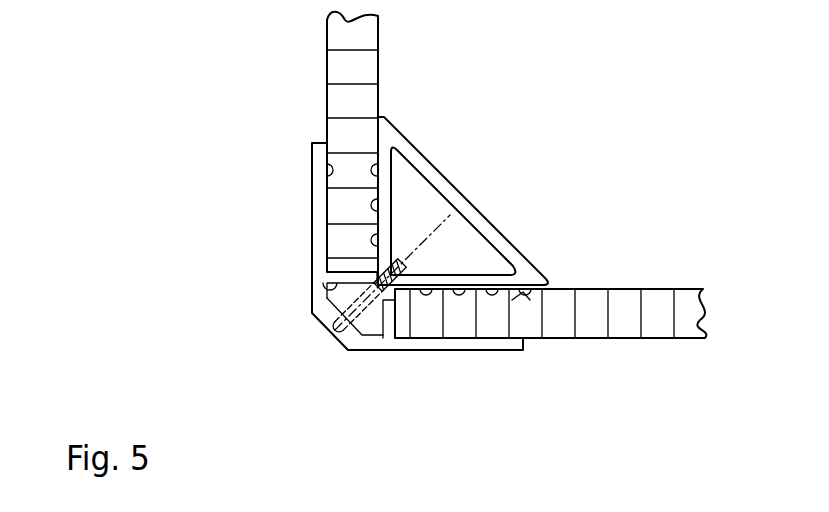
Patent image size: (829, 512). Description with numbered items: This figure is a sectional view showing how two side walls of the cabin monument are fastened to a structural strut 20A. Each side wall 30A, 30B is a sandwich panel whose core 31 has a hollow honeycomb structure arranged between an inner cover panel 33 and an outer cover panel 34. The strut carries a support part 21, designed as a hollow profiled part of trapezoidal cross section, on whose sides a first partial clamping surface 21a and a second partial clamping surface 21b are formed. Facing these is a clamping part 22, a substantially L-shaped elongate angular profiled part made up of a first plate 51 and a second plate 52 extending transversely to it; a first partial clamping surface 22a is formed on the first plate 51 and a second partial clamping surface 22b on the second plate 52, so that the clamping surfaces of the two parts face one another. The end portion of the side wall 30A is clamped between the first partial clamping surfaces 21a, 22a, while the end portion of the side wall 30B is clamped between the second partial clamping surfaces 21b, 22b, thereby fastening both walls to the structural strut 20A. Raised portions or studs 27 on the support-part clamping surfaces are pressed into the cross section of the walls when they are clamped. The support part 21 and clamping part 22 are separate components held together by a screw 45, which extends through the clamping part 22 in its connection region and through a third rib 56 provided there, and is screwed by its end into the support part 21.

The structural strut 20A is at (548, 180).
The support part 21 is at (508, 247).
The first partial clamping surface of the support part 21a is at (523, 295).
The second partial clamping surface of the support part 21b is at (378, 236).
The clamping part 22 is at (455, 348).
The first partial clamping surface of the clamping part 22a is at (428, 332).
The second partial clamping surface of the clamping part 22b is at (337, 178).
The raised portions or studs 27 is at (358, 160).
The side wall 30A is at (683, 340).
The side wall 30B is at (327, 72).
The core 31 is at (338, 33).
The inner cover panel 33 is at (380, 38).
The outer cover panel 34 is at (327, 115).
The screw 45 is at (338, 348).
The first plate 51 is at (366, 355).
The second plate 52 is at (312, 270).
The third rib 56 is at (330, 288).